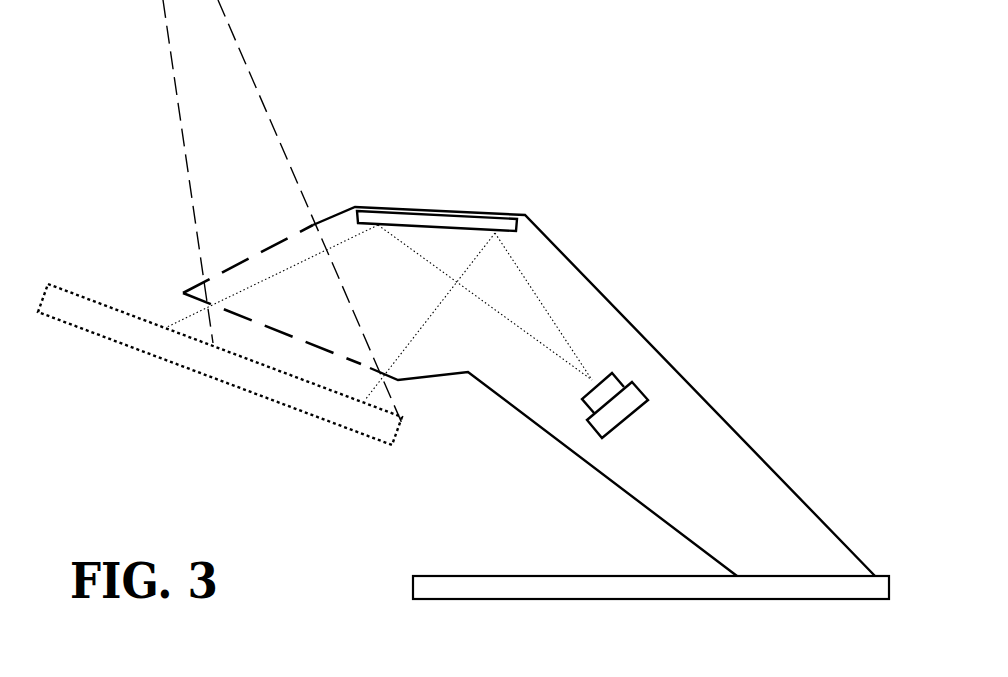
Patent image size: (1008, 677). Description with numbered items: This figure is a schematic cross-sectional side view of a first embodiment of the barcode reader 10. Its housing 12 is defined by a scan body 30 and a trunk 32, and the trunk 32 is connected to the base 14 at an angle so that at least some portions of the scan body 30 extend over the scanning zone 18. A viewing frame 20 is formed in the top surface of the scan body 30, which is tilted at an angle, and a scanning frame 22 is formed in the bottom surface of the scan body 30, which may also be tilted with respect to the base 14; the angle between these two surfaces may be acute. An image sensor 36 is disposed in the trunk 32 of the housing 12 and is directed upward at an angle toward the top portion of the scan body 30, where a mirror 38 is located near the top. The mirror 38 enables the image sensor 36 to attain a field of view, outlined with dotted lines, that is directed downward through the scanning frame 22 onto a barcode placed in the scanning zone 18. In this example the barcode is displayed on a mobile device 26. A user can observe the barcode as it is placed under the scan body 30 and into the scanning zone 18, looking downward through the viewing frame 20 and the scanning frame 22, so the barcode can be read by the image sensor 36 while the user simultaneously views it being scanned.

The barcode reader 10 is at (756, 145).
The housing 12 is at (632, 313).
The base 14 is at (535, 575).
The scanning zone 18 is at (342, 477).
The viewing frame 20 is at (266, 250).
The scanning frame 22 is at (326, 350).
The mobile device 26 is at (99, 335).
The scan body 30 is at (548, 235).
The trunk 32 is at (563, 443).
The image sensor 36 is at (627, 418).
The mirror 38 is at (437, 212).